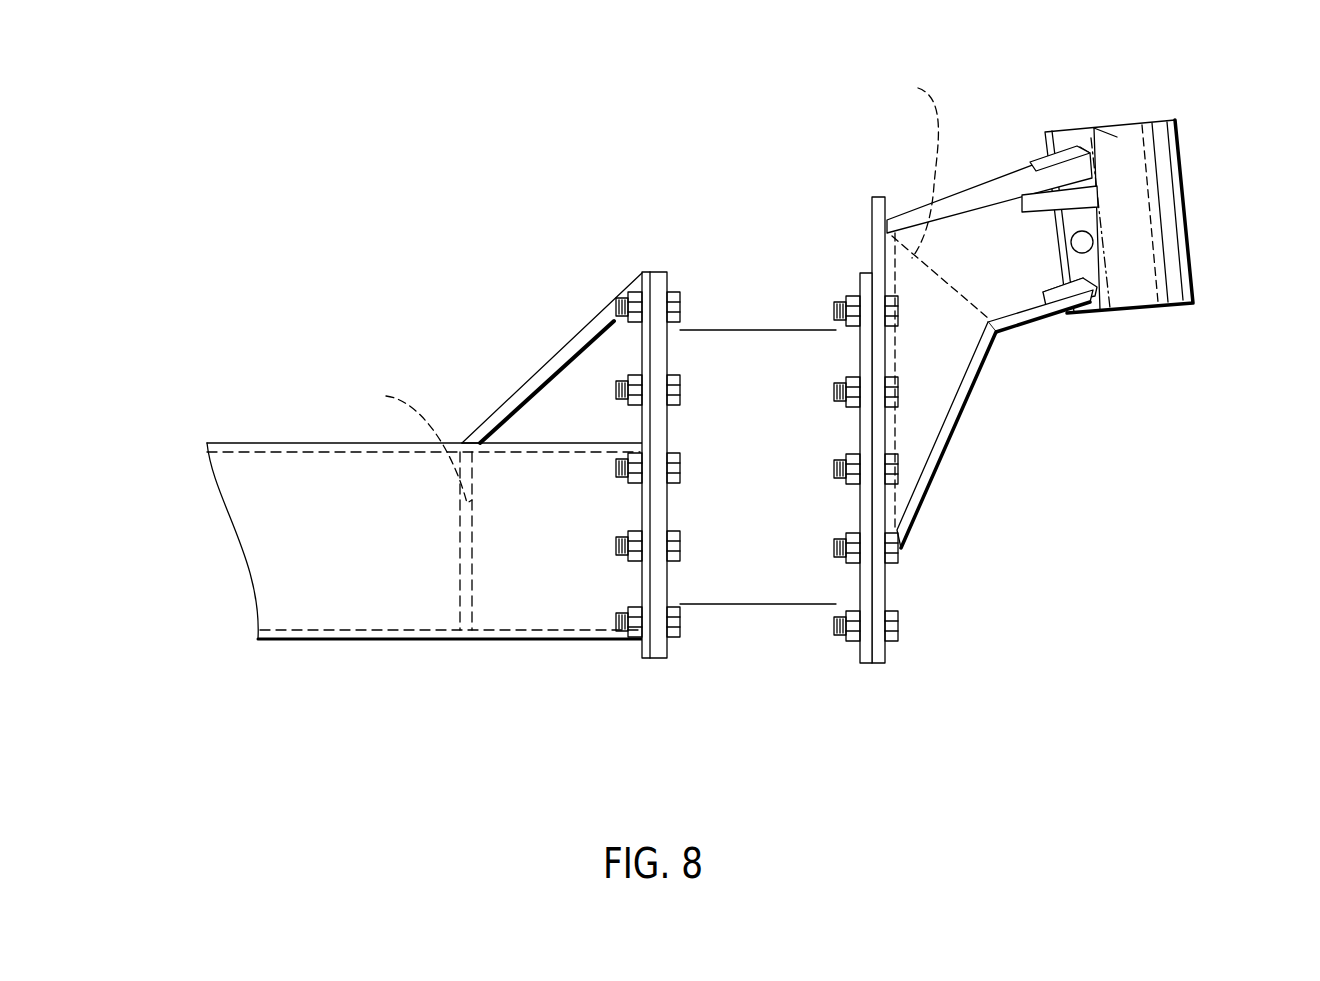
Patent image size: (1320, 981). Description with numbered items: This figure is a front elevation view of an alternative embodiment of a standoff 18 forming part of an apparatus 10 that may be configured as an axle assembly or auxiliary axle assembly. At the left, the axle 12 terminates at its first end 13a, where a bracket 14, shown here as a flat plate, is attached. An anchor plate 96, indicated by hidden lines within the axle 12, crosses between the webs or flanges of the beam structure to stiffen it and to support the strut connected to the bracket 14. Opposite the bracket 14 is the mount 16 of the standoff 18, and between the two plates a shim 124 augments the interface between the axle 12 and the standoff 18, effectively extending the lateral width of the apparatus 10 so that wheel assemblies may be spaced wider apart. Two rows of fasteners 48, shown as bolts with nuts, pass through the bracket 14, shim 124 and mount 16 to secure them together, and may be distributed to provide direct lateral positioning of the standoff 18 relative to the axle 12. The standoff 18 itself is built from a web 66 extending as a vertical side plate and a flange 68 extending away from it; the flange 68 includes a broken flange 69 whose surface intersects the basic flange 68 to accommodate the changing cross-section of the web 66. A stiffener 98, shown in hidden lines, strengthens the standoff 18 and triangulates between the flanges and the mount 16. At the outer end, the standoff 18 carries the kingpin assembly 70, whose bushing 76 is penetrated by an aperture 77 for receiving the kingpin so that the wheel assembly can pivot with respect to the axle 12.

The apparatus 10 is at (359, 182).
The axle 12 is at (323, 437).
The first end 13a is at (518, 652).
The bracket 14 is at (648, 277).
The mount 16 is at (873, 243).
The standoff 18 is at (963, 328).
The fasteners 48 is at (525, 393).
The web 66 is at (1003, 220).
The flange 68 is at (915, 217).
The broken flange 69 is at (925, 490).
The kingpin assembly 70 is at (1201, 262).
The bushing 76 is at (1168, 190).
The aperture 77 is at (1117, 137).
The anchor plate 96 is at (411, 442).
The stiffener 98 is at (909, 165).
The shim 124 is at (738, 564).